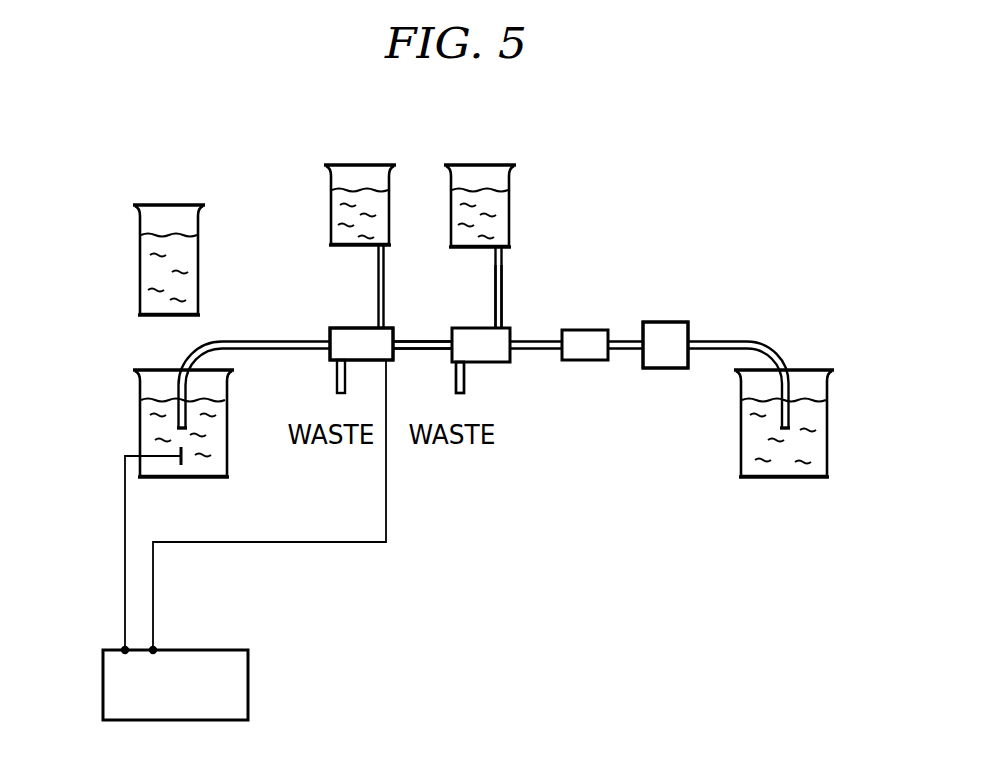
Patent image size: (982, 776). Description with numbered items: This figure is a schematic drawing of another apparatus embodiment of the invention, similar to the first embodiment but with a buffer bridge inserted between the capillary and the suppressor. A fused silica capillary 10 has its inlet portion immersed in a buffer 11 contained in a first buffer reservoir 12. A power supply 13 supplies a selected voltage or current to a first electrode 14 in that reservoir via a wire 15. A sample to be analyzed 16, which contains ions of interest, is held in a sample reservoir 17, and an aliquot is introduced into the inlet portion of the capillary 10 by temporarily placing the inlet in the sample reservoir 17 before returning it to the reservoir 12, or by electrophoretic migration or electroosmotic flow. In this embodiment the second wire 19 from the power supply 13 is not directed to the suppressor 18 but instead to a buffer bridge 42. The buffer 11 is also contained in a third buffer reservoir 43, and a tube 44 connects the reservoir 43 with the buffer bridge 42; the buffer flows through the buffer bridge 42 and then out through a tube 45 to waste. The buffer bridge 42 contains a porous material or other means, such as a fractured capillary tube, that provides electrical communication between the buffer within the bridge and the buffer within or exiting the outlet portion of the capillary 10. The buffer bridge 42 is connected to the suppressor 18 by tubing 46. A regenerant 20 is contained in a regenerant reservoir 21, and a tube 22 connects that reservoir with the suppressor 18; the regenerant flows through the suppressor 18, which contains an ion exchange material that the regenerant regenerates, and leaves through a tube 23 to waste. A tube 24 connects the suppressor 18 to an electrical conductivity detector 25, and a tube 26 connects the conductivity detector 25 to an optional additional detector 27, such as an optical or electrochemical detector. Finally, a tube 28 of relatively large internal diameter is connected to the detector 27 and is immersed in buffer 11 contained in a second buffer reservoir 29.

The fused silica capillary 10 is at (215, 348).
The buffer 11 is at (342, 228).
The first buffer reservoir 12 is at (139, 387).
The power supply 13 is at (248, 668).
The first electrode 14 is at (183, 465).
The wire 15 is at (125, 557).
The sample to be analyzed 16 is at (139, 262).
The sample reservoir 17 is at (139, 222).
The suppressor 18 is at (510, 335).
The wire 19 is at (307, 545).
The regenerant 20 is at (511, 213).
The regenerant reservoir 21 is at (493, 223).
The tube 22 is at (503, 268).
The tube 23 is at (465, 383).
The tube 24 is at (548, 352).
The electrical conductivity detector 25 is at (603, 363).
The tube 26 is at (622, 340).
The additional detector 27 is at (677, 322).
The tube 28 is at (753, 341).
The second buffer reservoir 29 is at (828, 388).
The buffer bridge 42 is at (338, 327).
The third buffer reservoir 43 is at (330, 178).
The tube 44 is at (503, 362).
The tube 45 is at (333, 330).
The tubing 46 is at (403, 352).